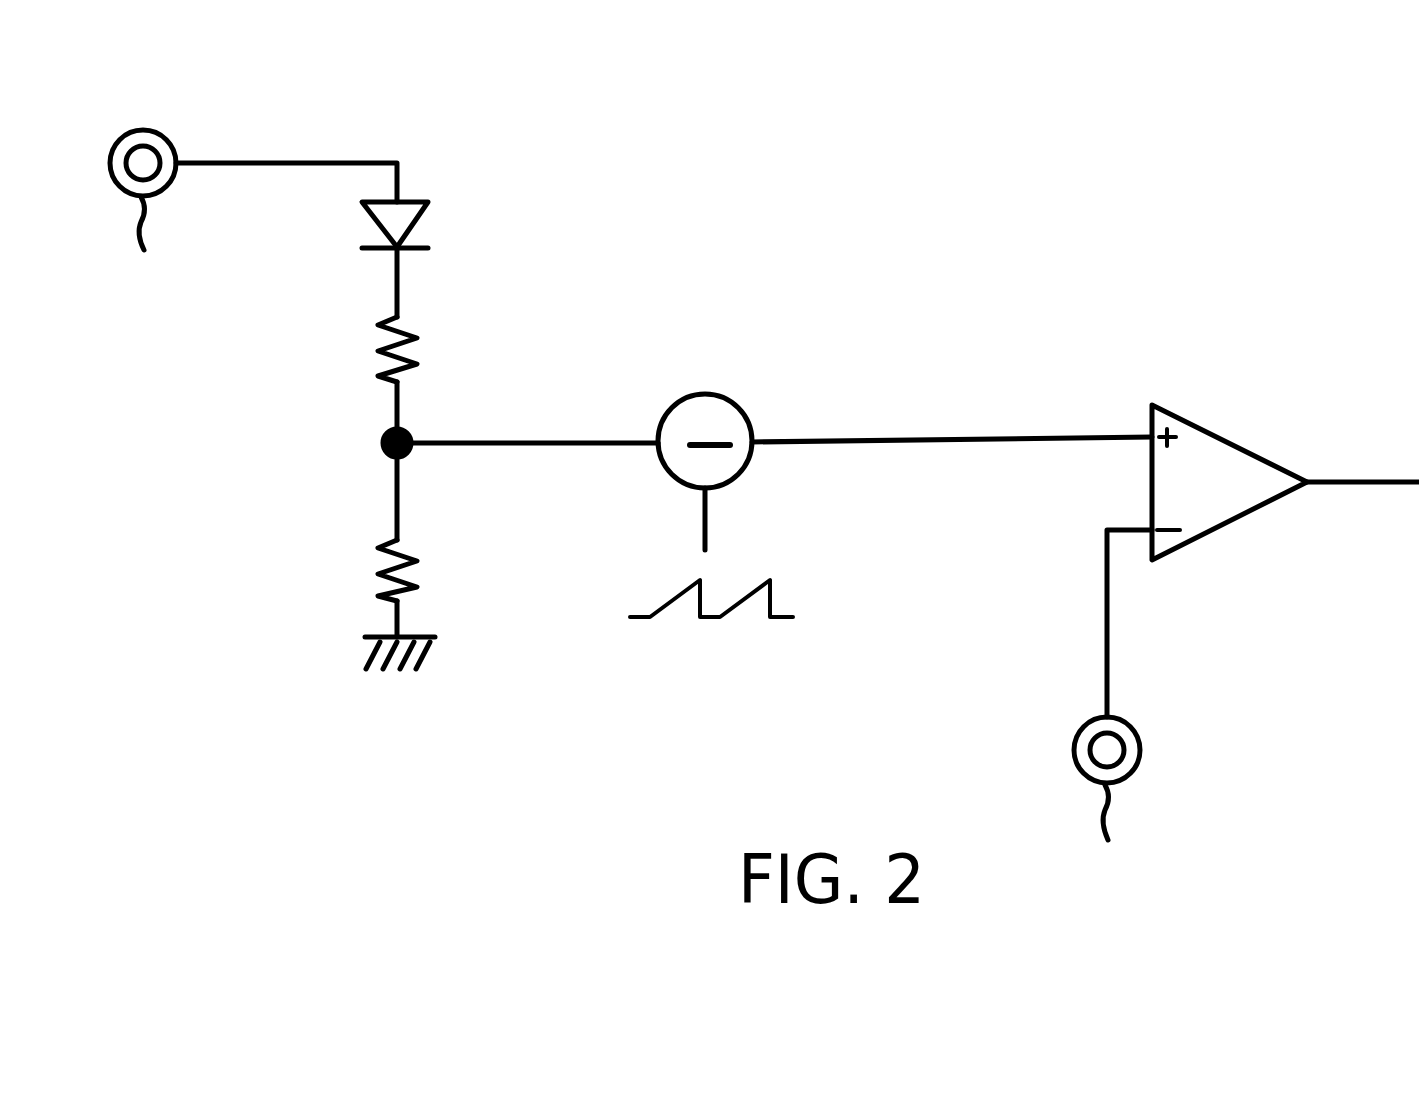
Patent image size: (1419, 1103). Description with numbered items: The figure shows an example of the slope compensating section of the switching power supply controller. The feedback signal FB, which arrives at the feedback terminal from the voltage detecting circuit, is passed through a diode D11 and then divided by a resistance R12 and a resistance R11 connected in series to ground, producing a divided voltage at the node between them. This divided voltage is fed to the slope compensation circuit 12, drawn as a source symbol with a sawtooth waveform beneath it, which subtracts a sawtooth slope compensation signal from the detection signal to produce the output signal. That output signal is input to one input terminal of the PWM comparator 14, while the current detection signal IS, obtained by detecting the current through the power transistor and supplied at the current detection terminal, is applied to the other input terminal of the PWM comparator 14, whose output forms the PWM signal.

The slope compensation circuit 12 is at (747, 410).
The PWM comparator 14 is at (1223, 438).
The diode D11 is at (428, 228).
The resistance R12 is at (422, 347).
The resistance R11 is at (425, 577).
The feedback signal FB is at (139, 191).
The current detection signal IS is at (1127, 782).